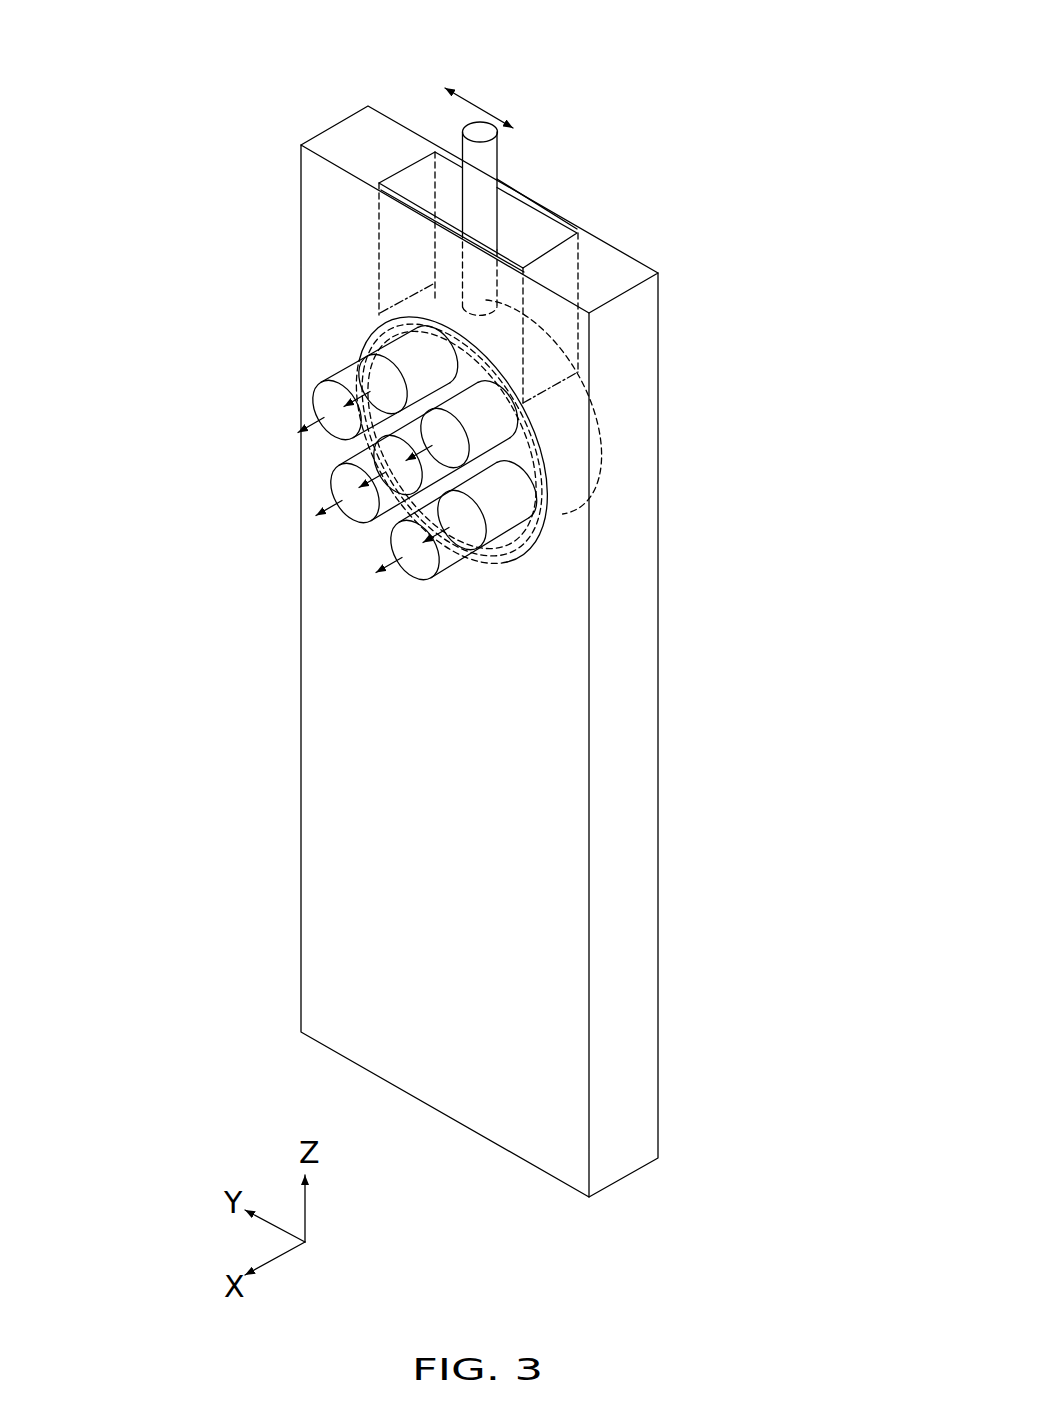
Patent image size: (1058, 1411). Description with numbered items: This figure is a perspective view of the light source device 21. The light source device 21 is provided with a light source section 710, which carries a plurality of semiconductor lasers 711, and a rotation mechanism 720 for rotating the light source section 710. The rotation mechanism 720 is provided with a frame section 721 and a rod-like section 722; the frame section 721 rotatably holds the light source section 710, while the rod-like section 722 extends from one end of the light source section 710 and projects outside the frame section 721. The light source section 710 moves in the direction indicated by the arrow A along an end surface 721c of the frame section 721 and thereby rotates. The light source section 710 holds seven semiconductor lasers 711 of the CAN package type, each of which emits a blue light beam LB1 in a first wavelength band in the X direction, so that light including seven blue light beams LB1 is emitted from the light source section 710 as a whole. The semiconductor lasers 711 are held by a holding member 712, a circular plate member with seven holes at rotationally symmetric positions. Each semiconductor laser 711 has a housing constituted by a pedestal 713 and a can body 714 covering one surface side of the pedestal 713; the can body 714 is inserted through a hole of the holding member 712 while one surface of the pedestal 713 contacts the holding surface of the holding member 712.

The light source device 21 is at (547, 107).
The light source section 710 is at (454, 457).
The semiconductor laser 711 is at (383, 340).
The holding member 712 is at (520, 542).
The pedestal 713 is at (540, 467).
The can body 714 is at (502, 415).
The rotation mechanism 720 is at (413, 120).
The frame section 721 is at (640, 793).
The end surface 721c is at (605, 257).
The rod-like section 722 is at (487, 158).
The blue light beam LB1 is at (324, 418).
The arrow A direction A is at (473, 100).